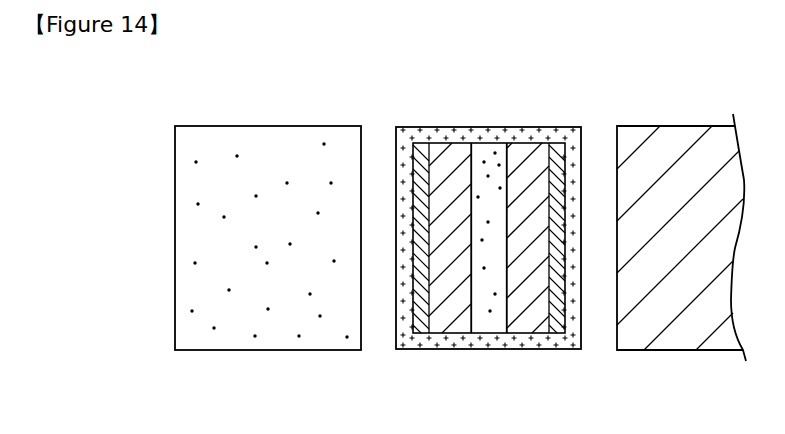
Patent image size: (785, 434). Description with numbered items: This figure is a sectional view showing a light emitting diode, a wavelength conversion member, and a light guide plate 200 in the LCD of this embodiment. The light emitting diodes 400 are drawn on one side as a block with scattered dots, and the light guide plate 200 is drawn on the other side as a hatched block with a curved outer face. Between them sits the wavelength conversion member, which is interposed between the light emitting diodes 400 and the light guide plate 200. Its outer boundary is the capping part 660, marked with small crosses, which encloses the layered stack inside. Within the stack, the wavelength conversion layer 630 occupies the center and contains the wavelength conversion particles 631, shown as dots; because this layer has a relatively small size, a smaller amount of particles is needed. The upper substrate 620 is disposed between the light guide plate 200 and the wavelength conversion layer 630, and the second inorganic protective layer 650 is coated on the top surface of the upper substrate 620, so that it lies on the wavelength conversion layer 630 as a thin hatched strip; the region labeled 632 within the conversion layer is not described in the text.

The light emitting diodes 400 is at (276, 340).
The light guide plate 200 is at (683, 337).
The capping part 660 is at (484, 128).
The second inorganic protective layer 650 is at (422, 341).
The upper substrate 620 is at (441, 328).
The wavelength conversion layer 630 is at (496, 275).
The wavelength conversion particles 631 is at (491, 314).
The electrolyte matrix 632 is at (482, 327).